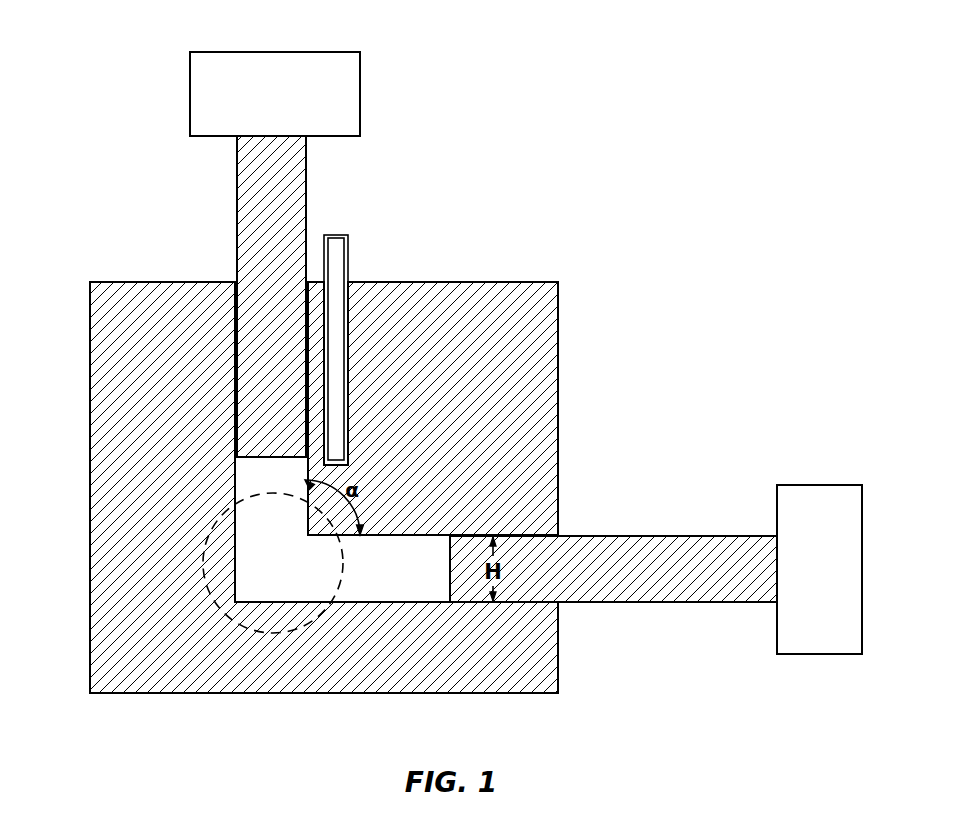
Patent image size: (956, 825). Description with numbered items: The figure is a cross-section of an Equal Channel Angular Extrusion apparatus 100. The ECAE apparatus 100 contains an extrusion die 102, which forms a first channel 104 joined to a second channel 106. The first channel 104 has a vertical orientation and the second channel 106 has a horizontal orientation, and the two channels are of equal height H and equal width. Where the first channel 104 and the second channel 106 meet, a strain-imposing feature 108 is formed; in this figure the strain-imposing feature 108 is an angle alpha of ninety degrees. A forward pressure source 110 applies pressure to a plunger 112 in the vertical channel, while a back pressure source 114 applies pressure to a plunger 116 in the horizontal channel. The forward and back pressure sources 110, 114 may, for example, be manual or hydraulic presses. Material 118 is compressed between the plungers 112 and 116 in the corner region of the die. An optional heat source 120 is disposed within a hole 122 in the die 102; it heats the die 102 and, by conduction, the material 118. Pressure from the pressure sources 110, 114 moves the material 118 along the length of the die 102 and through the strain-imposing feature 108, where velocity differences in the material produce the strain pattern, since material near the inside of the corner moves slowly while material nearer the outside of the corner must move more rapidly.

The ECAE apparatus 100 is at (560, 197).
The extrusion die 102 is at (144, 374).
The first channel 104 is at (236, 320).
The second channel 106 is at (507, 531).
The strain-imposing feature 108 is at (82, 570).
The forward pressure source 110 is at (256, 105).
The plunger 112 is at (253, 219).
The back pressure source 114 is at (809, 551).
The plunger 116 is at (595, 582).
The material 118 is at (366, 580).
The heat source 120 is at (350, 240).
The hole 122 is at (349, 274).